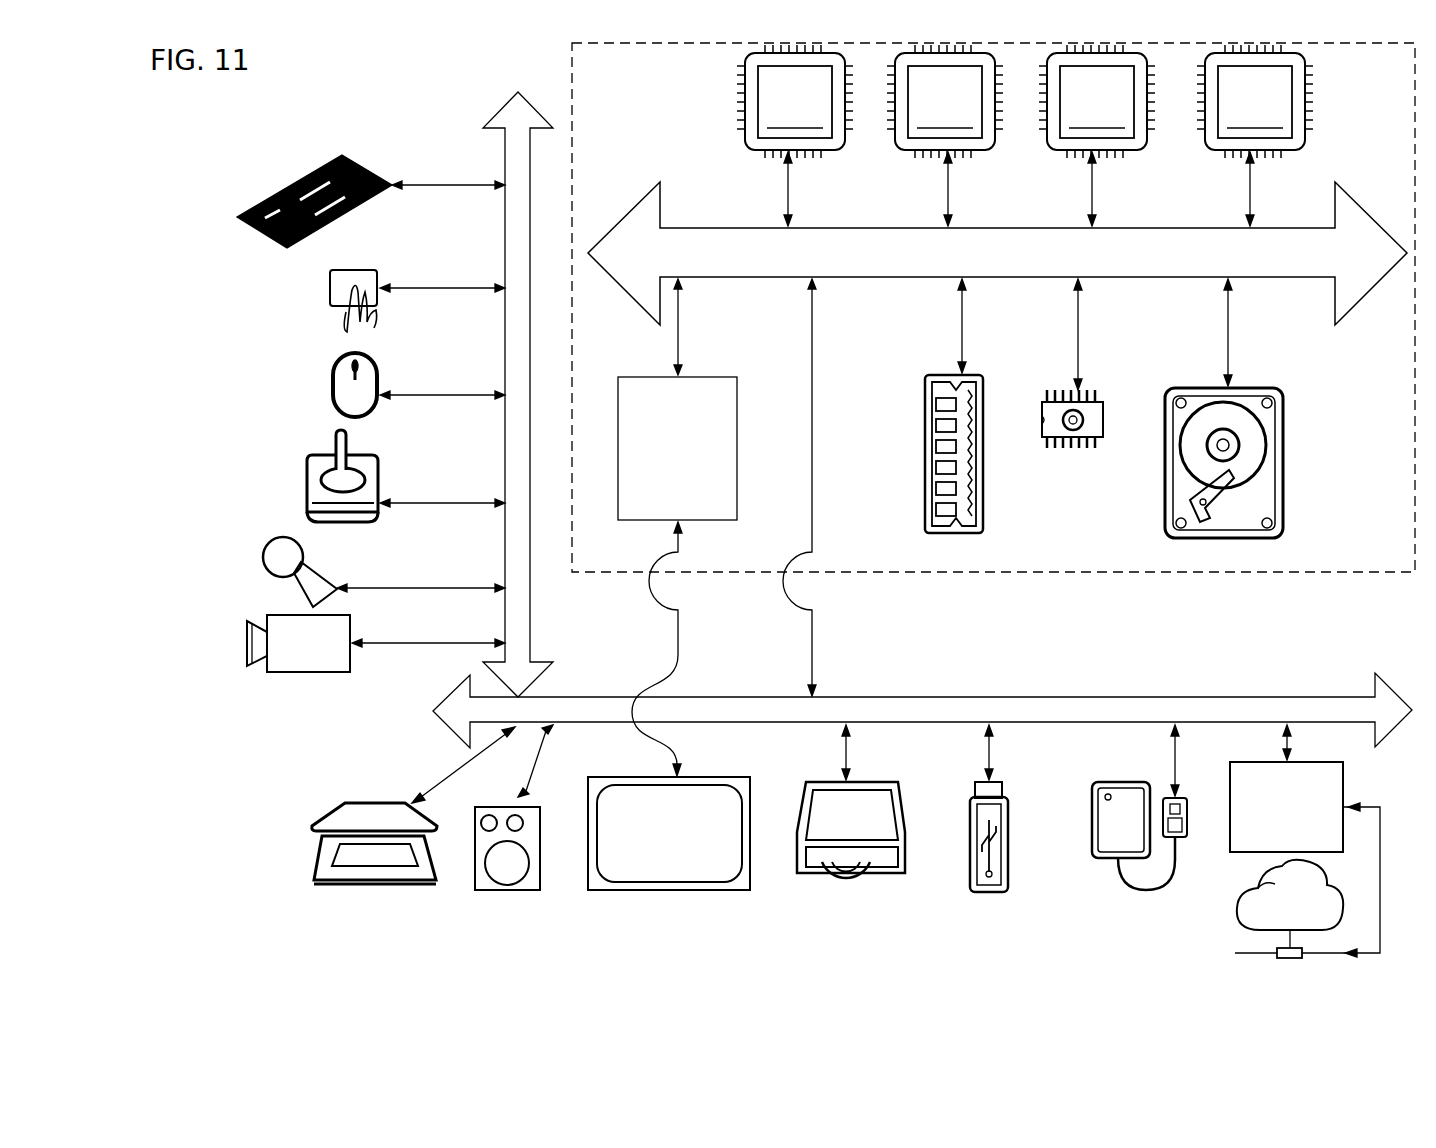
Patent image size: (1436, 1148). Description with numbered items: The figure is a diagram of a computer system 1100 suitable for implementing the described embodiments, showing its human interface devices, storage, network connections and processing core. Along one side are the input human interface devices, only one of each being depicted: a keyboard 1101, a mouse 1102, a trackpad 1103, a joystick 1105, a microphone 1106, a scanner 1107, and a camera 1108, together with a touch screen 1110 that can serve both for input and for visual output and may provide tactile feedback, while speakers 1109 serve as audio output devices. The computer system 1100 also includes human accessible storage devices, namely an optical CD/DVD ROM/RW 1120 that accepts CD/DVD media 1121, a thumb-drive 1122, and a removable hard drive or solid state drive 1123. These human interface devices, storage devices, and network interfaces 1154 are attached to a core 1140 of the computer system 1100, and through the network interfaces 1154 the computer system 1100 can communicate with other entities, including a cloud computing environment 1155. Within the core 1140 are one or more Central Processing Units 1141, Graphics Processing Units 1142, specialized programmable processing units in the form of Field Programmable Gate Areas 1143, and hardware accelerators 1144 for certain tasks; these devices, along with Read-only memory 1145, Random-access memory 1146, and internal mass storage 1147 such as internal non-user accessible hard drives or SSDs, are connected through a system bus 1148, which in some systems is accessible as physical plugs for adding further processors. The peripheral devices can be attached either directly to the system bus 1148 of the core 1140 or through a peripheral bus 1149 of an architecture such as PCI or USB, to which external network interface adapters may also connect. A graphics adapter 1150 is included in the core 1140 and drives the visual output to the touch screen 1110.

The computer system 1100 is at (305, 92).
The keyboard 1101 is at (237, 218).
The mouse 1102 is at (330, 388).
The trackpad 1103 is at (330, 292).
The joystick 1105 is at (307, 500).
The microphone 1106 is at (265, 560).
The scanner 1107 is at (315, 860).
The camera 1108 is at (250, 650).
The speakers 1109 is at (508, 890).
The touch screen 1110 is at (660, 890).
The CD/DVD ROM/RW 1120 is at (900, 875).
The CD/DVD media 1121 is at (828, 885).
The thumb-drive 1122 is at (985, 893).
The removable hard drive or solid state drive 1123 is at (1090, 860).
The core 1140 is at (1015, 573).
The Central Processing Units 1141 is at (795, 135).
The Graphics Processing Units 1142 is at (945, 135).
The Field Programmable Gate Areas 1143 is at (1097, 135).
The hardware accelerators 1144 is at (1255, 135).
The Read-only memory 1145 is at (1065, 450).
The Random-access memory 1146 is at (925, 450).
The internal mass storage 1147 is at (1188, 388).
The system bus 1148 is at (1143, 265).
The peripheral bus 1149 is at (505, 135).
The graphics adapter 1150 is at (677, 527).
The network interfaces 1154 is at (1286, 788).
The cloud computing environment 1155 is at (1238, 920).